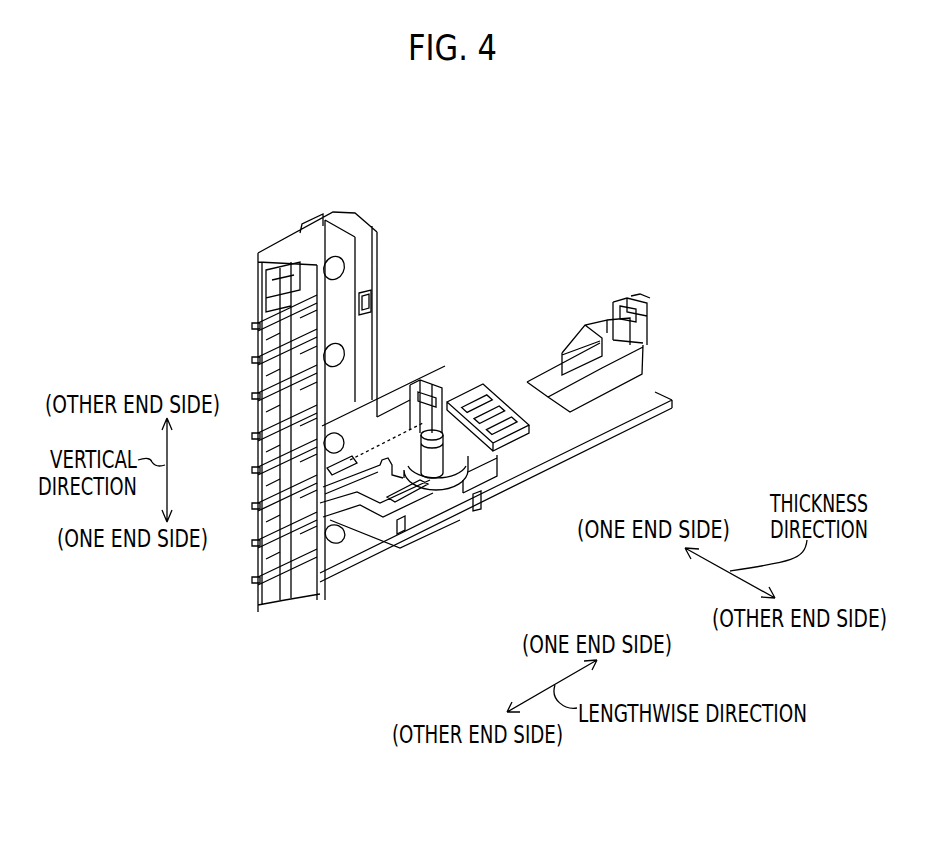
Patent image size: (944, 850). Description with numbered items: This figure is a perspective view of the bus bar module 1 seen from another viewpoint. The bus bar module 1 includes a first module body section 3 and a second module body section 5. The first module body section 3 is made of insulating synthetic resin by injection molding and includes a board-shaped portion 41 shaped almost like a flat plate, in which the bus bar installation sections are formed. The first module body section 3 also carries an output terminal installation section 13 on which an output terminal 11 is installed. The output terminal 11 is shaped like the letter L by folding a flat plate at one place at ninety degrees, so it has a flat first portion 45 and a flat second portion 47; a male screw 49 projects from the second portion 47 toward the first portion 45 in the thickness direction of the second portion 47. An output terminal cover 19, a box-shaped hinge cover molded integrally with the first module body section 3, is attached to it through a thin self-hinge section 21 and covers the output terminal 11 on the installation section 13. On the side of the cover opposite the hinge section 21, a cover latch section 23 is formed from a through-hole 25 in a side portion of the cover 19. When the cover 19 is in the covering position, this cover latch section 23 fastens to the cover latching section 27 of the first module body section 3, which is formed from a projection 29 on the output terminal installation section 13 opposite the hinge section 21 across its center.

The bus bar module 1 is at (331, 613).
The first module body section 3 is at (348, 222).
The second module body section 5 is at (650, 412).
The output terminal 11 is at (442, 488).
The output terminal installation section 13 is at (476, 510).
The output terminal cover 19 is at (598, 418).
The hinge section 21 is at (525, 432).
The cover latch section 23 is at (685, 319).
The through-hole 25 is at (636, 322).
The cover latching section 27 is at (390, 552).
The projection 29 is at (401, 534).
The board-shaped portion 41 is at (303, 298).
The first portion 45 is at (394, 416).
The second portion 47 is at (453, 466).
The male screw 49 is at (437, 447).